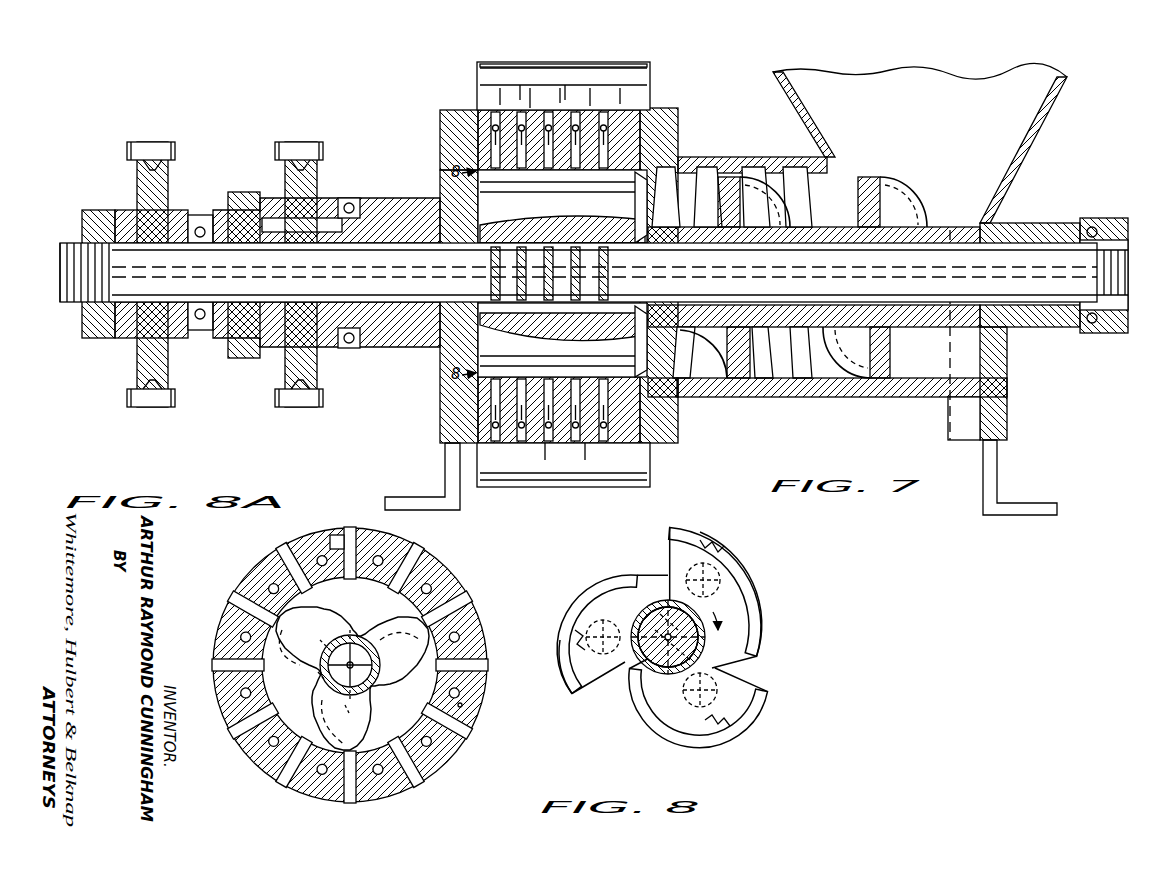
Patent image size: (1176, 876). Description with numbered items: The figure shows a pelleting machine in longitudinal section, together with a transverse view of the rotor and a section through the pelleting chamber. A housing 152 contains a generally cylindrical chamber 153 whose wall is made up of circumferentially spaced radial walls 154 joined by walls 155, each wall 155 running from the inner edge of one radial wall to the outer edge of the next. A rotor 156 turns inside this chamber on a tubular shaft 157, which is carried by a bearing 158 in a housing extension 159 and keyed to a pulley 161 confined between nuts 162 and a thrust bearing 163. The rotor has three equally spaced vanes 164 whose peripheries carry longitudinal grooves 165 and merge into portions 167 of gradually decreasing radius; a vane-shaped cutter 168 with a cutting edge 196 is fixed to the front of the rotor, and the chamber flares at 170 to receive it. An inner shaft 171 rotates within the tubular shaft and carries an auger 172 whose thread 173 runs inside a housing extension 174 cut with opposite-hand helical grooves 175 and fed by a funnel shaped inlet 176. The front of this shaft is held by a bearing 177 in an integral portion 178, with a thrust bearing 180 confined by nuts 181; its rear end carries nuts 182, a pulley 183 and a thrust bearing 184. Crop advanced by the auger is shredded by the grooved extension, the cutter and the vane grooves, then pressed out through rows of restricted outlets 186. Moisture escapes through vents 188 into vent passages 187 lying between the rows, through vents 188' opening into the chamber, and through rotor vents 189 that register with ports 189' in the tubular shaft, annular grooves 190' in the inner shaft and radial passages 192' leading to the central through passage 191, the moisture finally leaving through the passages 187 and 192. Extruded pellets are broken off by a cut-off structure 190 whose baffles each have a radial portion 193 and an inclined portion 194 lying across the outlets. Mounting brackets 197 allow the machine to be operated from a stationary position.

In FIG. 7, the housing 152 is at (440, 122).
In FIG. 8A, the housing 152 is at (245, 582).
In FIG. 7, the chamber 153 is at (560, 372).
In FIG. 8A, the chamber 153 is at (395, 613).
In FIG. 8A, the radial walls 154 is at (395, 736).
In FIG. 8A, the walls 155 is at (285, 650).
In FIG. 7, the rotor 156 is at (555, 210).
In FIG. 8A, the rotor 156 is at (400, 656).
In FIG. 8, the rotor 156 is at (632, 707).
In FIG. 8, the tubular shaft 157 is at (706, 645).
In FIG. 7, the bearing 158 is at (393, 200).
In FIG. 7, the housing extension 159 is at (410, 347).
In FIG. 7, the pulley 161 is at (302, 150).
In FIG. 7, the nuts 162 is at (243, 192).
In FIG. 7, the thrust bearing 163 is at (350, 348).
In FIG. 8, the vanes 164 is at (607, 595).
In FIG. 8, the grooves 165 is at (720, 550).
In FIG. 8, the portions of gradually decreasing radius 167 is at (744, 628).
In FIG. 7, the cutter 168 is at (636, 202).
In FIG. 8, the cutter 168 is at (565, 615).
In FIG. 7, the flared portion of chamber 170 is at (680, 160).
In FIG. 7, the shaft 171 is at (578, 272).
In FIG. 8A, the shaft 171 is at (349, 634).
In FIG. 8, the shaft 171 is at (655, 600).
In FIG. 7, the auger 172 is at (822, 232).
In FIG. 7, the thread 173 is at (905, 202).
In FIG. 7, the housing extension 174 is at (782, 397).
In FIG. 7, the helical grooves 175 is at (760, 170).
In FIG. 7, the funnel shaped inlet 176 is at (1035, 142).
In FIG. 7, the bearing 177 is at (1040, 226).
In FIG. 7, the integral portion 178 is at (1050, 330).
In FIG. 7, the thrust bearing 180 is at (1092, 324).
In FIG. 7, the nuts 181 is at (1105, 222).
In FIG. 7, the nuts 182 is at (98, 340).
In FIG. 7, the pulley 183 is at (165, 350).
In FIG. 7, the thrust bearing 184 is at (200, 227).
In FIG. 7, the restricted outlets 186 is at (500, 442).
In FIG. 8A, the restricted outlets 186 is at (466, 712).
In FIG. 7, the vent passages 187 is at (462, 122).
In FIG. 8A, the vent passages 187 is at (338, 540).
In FIG. 7, the vents 188 is at (551, 130).
In FIG. 8A, the vents 188 is at (350, 652).
In FIG. 8A, the vents 188' is at (388, 665).
In FIG. 8A, the vents 189 is at (306, 686).
In FIG. 8A, the ports 189' is at (313, 629).
In FIG. 7, the cut-off structure 190 is at (596, 86).
In FIG. 7, the annular grooves 190' is at (591, 273).
In FIG. 7, the central through passage 191 is at (855, 269).
In FIG. 8A, the central through passage 191 is at (385, 665).
In FIG. 7, the passages 192 is at (566, 279).
In FIG. 8A, the radial passages 192' is at (330, 712).
In FIG. 7, the radial portion 193 is at (575, 85).
In FIG. 7, the inclined portion 194 is at (515, 67).
In FIG. 7, the cutting edge 196 is at (680, 400).
In FIG. 7, the mounting brackets 197 is at (447, 497).